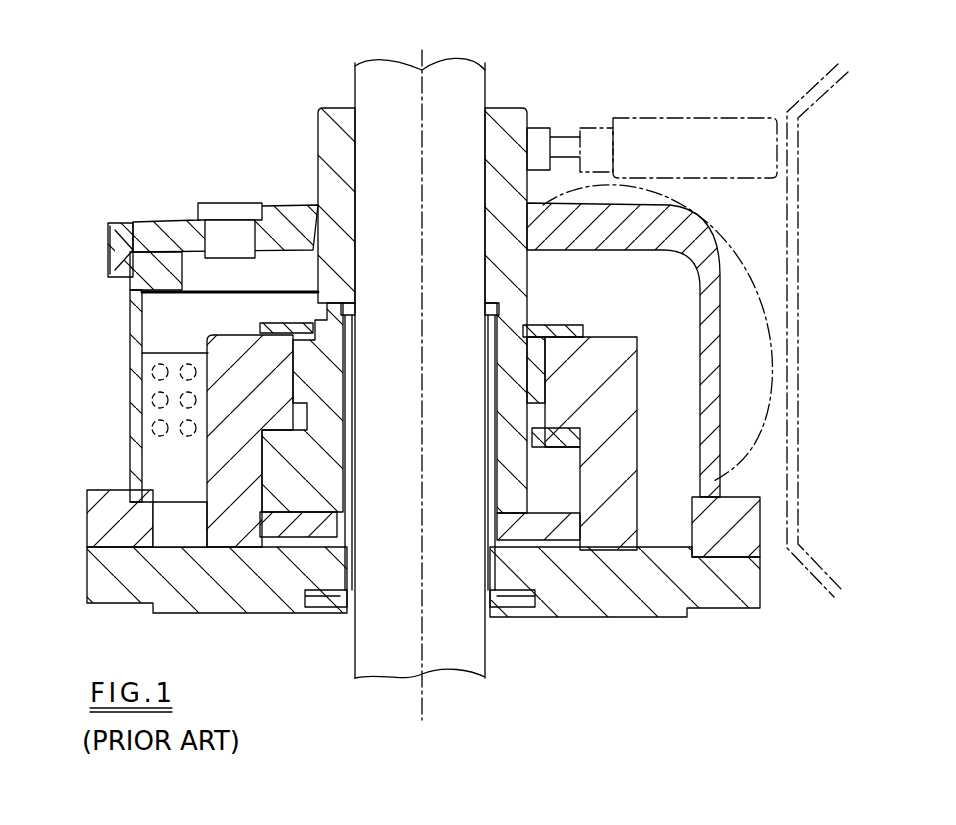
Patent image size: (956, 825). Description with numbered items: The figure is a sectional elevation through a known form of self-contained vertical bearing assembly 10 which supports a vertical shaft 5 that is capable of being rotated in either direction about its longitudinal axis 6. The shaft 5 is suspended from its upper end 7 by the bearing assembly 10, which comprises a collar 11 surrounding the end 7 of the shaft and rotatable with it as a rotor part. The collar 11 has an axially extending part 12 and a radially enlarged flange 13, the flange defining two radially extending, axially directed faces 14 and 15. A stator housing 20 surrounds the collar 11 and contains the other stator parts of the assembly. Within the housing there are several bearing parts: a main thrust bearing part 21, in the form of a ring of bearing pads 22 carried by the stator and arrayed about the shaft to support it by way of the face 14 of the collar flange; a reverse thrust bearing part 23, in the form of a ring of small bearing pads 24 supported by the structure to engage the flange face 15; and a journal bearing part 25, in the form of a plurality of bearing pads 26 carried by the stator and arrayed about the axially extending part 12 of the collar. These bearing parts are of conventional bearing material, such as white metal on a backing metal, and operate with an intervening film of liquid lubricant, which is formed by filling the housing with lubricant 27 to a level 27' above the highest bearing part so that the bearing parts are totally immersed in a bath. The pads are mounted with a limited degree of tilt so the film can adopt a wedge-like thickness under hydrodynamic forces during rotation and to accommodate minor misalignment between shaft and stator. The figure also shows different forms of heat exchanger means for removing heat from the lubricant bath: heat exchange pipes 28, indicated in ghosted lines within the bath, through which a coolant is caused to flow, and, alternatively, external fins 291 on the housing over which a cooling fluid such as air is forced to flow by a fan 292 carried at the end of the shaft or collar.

The shaft 5 is at (377, 637).
The longitudinal axis 6 is at (427, 678).
The upper end 7 is at (398, 142).
The vertical bearing assembly 10 is at (284, 138).
The collar 11 is at (320, 112).
The axially extending part 12 is at (316, 374).
The radially enlarged flange 13 is at (273, 468).
The face 14 is at (530, 512).
The face 15 is at (536, 448).
The stator housing 20 is at (128, 472).
The main thrust bearing part 21 is at (591, 537).
The bearing pads 22 is at (533, 520).
The reverse thrust bearing part 23 is at (596, 443).
The small bearing pads 24 is at (577, 424).
The journal bearing part 25 is at (556, 306).
The bearing pads 26 is at (598, 348).
The lubricant 27 is at (772, 455).
The level 27' is at (768, 326).
The heat exchange pipes 28 is at (160, 368).
The external fins 291 is at (748, 264).
The fan 292 is at (672, 133).